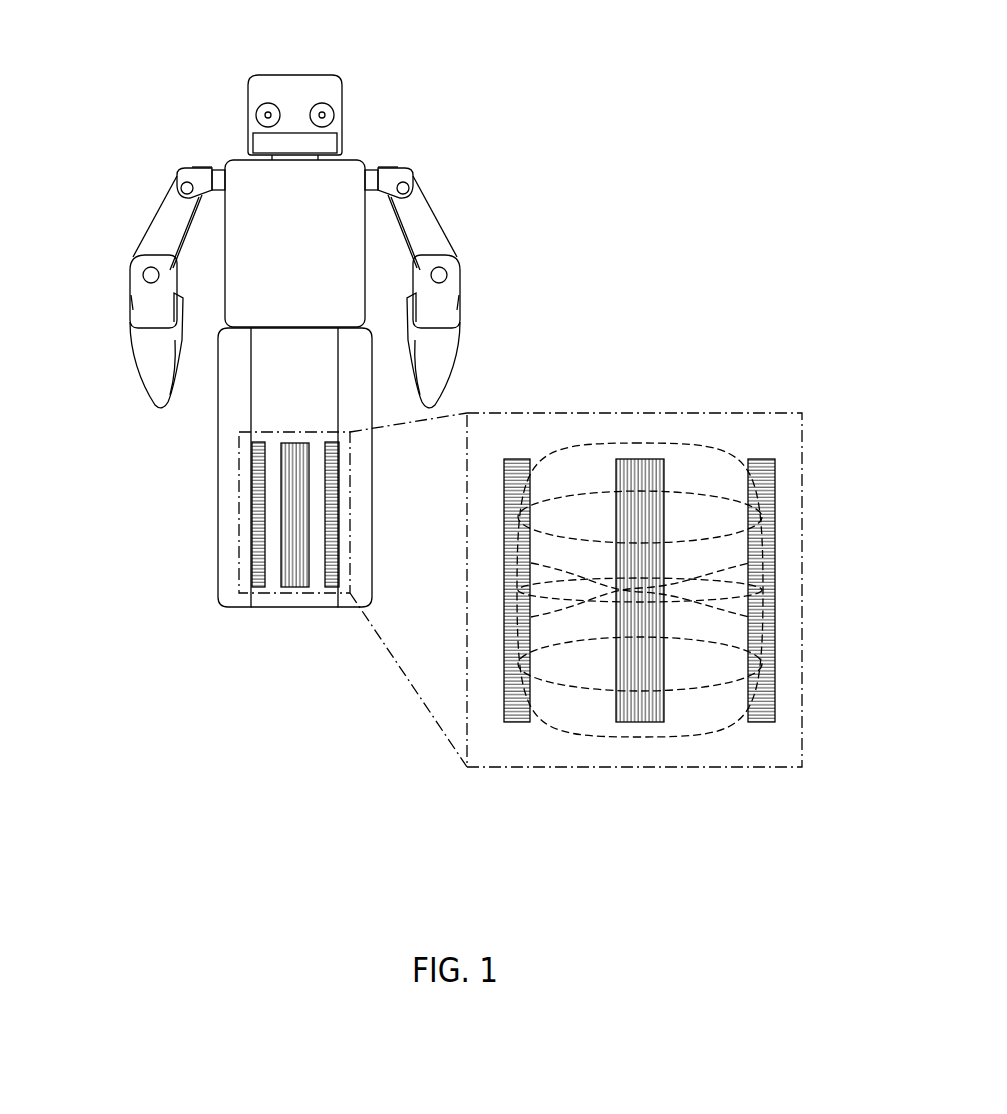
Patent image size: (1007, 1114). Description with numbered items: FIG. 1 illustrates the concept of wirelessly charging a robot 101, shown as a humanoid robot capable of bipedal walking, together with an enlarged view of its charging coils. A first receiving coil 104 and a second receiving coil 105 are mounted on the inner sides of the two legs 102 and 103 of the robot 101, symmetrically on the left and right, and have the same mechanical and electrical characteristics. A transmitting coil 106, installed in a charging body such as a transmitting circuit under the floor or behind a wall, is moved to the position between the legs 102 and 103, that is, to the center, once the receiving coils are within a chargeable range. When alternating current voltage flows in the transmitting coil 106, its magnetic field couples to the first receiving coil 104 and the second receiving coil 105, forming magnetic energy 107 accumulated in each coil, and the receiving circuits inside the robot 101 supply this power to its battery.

The robot 101 is at (343, 62).
The leg 102 is at (230, 378).
The leg 103 is at (365, 373).
The first receiving coil 104 is at (504, 873).
The second receiving coil 105 is at (805, 873).
The transmitting coil 106 is at (655, 873).
The magnetic energy 107 is at (647, 443).